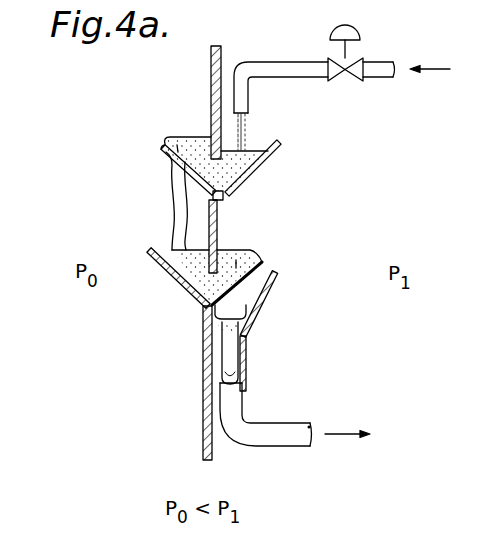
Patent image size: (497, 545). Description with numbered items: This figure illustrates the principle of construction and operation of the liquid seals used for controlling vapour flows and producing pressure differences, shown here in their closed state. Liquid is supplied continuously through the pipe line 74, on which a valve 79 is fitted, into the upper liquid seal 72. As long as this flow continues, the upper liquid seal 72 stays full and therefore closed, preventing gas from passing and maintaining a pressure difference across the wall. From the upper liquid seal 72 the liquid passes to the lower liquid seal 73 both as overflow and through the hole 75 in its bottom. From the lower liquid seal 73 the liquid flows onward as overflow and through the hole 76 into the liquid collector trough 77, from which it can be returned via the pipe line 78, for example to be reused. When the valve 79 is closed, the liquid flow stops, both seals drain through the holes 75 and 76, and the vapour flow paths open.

The upper liquid seal 72 is at (280, 148).
The lower liquid seal 73 is at (264, 271).
The pipe line 74 is at (293, 78).
The hole 75 is at (225, 196).
The hole 76 is at (213, 304).
The liquid collector trough 77 is at (245, 337).
The pipe line 78 is at (240, 403).
The valve 79 is at (357, 60).